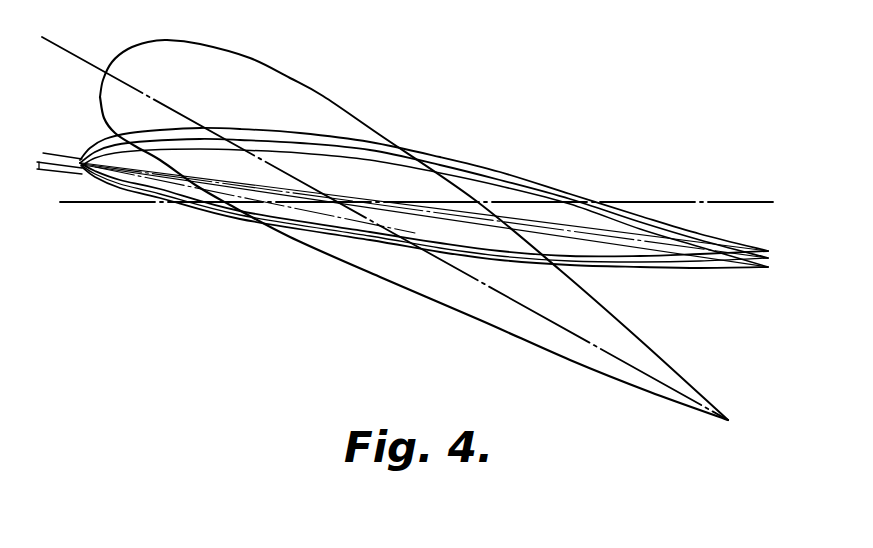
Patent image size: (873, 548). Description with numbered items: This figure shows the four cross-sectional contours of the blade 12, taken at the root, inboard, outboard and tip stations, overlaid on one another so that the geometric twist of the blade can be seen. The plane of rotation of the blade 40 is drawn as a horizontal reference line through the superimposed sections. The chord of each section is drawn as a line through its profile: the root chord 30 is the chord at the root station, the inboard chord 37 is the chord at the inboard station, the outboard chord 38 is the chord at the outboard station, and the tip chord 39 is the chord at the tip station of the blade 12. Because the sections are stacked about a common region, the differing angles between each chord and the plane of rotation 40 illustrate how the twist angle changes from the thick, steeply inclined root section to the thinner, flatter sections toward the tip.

The blade 12 is at (323, 92).
The root chord 30 is at (64, 49).
The inboard chord 37 is at (58, 153).
The outboard chord 38 is at (63, 168).
The tip chord 39 is at (45, 168).
The plane of rotation of the blade 40 is at (742, 202).